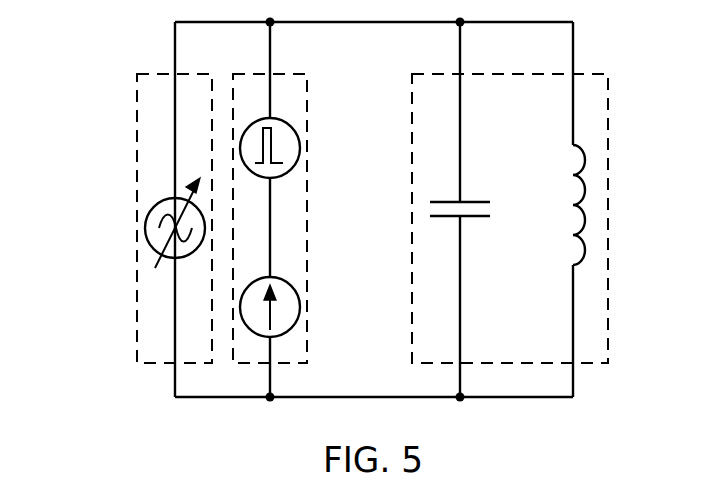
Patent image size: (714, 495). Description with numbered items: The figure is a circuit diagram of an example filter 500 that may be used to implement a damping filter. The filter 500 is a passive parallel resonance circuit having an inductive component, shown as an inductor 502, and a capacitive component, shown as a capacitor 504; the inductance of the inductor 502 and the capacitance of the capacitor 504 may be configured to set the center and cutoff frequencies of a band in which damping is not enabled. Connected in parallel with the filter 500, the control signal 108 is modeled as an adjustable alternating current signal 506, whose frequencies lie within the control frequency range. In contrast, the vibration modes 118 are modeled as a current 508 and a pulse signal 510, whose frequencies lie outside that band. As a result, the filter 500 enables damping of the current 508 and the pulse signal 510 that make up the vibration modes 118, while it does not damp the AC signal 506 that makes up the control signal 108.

The control signal 108 is at (137, 74).
The vibration mode(s) 118 is at (307, 95).
The filter 500 is at (412, 74).
The inductor 502 is at (573, 172).
The capacitor 504 is at (467, 217).
The adjustable alternating current (AC) signal 506 is at (151, 211).
The current 508 is at (296, 290).
The pulse signal 510 is at (298, 138).